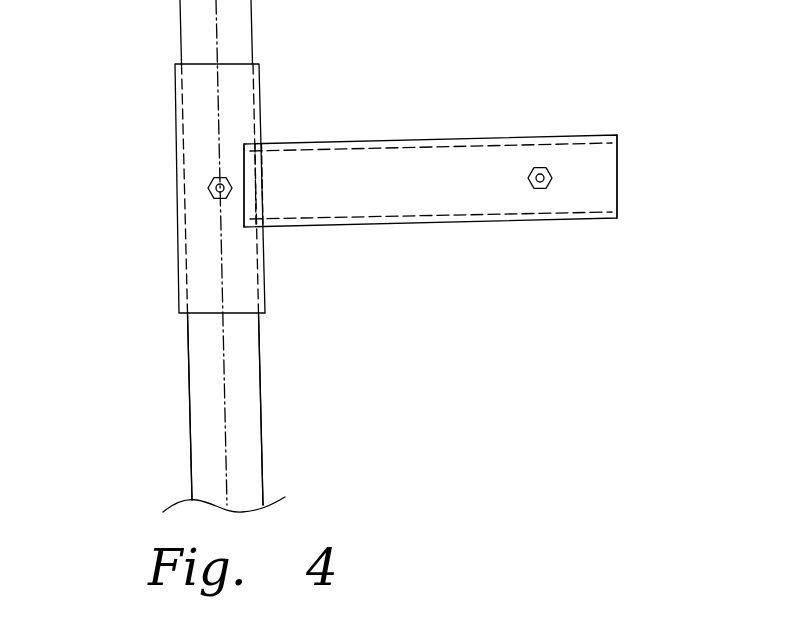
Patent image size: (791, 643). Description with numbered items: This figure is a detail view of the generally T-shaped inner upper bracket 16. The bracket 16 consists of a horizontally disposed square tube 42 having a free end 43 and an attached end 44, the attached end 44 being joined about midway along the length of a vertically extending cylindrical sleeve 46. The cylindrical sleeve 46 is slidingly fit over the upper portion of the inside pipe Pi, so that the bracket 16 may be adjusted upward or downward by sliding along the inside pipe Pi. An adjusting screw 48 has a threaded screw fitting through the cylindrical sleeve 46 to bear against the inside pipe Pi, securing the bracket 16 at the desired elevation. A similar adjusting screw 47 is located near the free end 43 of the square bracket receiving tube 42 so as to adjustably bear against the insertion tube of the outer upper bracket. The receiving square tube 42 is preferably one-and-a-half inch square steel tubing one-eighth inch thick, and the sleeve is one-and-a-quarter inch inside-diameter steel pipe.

The inner upper bracket 16 is at (177, 110).
The inside pipe Pi is at (263, 403).
The square tube 42 is at (415, 139).
The free end 43 is at (617, 172).
The attached end 44 is at (244, 170).
The cylindrical sleeve 46 is at (178, 274).
The adjusting screw 47 is at (541, 165).
The adjusting screw 48 is at (210, 193).